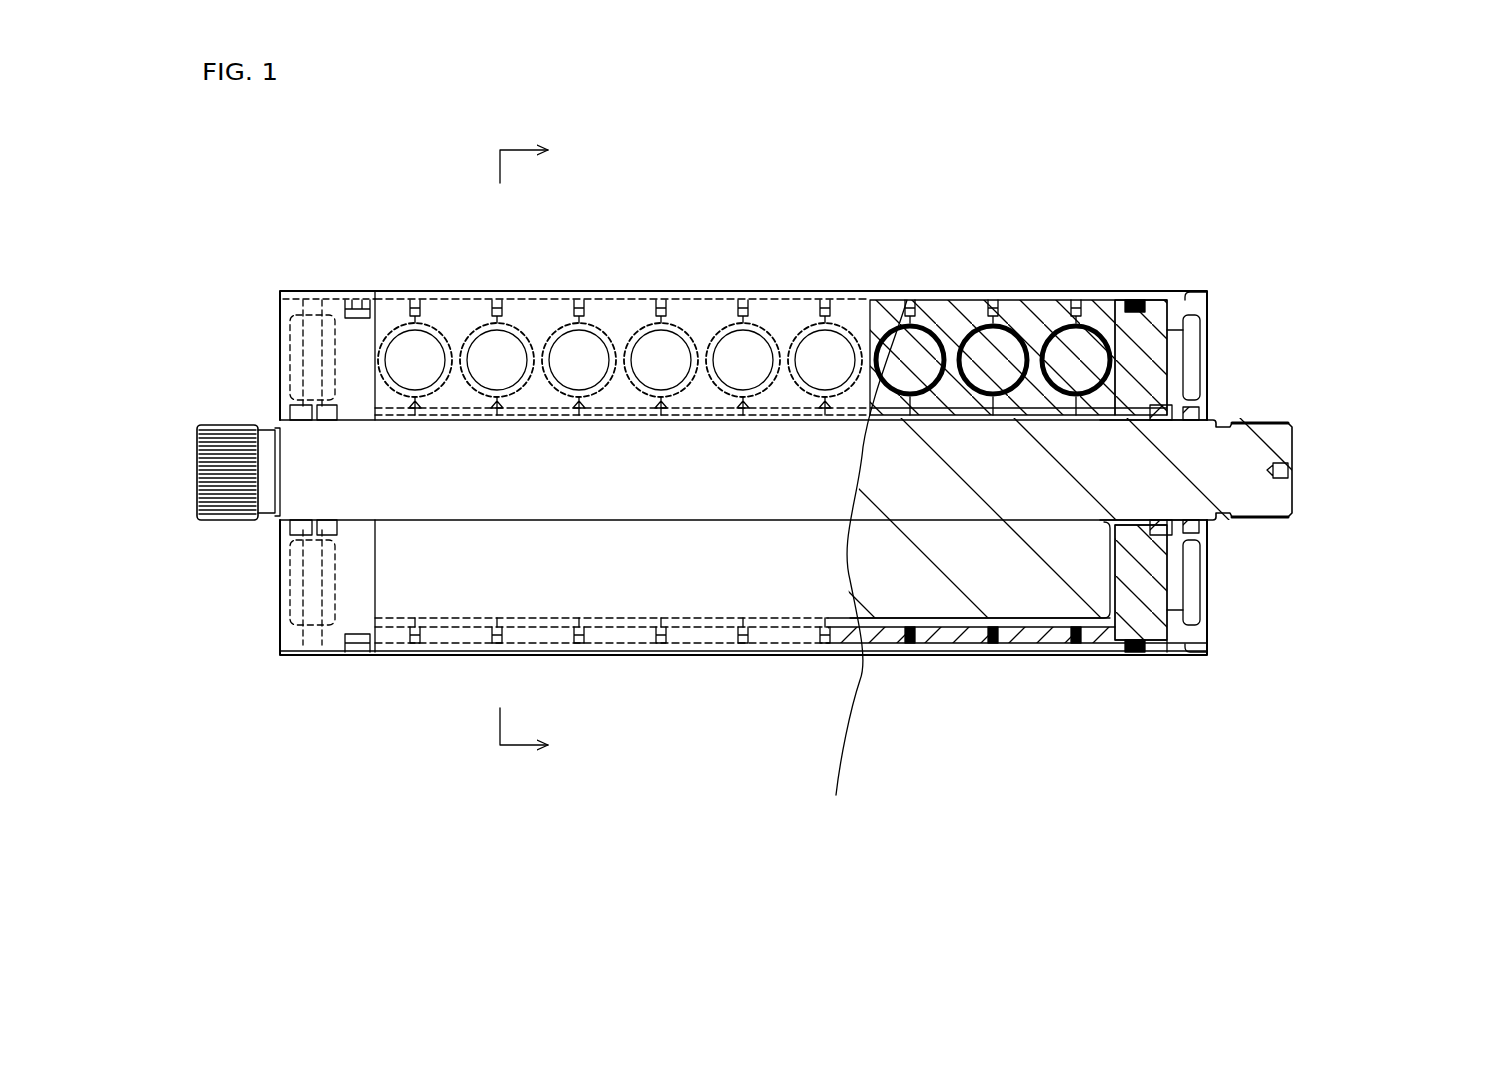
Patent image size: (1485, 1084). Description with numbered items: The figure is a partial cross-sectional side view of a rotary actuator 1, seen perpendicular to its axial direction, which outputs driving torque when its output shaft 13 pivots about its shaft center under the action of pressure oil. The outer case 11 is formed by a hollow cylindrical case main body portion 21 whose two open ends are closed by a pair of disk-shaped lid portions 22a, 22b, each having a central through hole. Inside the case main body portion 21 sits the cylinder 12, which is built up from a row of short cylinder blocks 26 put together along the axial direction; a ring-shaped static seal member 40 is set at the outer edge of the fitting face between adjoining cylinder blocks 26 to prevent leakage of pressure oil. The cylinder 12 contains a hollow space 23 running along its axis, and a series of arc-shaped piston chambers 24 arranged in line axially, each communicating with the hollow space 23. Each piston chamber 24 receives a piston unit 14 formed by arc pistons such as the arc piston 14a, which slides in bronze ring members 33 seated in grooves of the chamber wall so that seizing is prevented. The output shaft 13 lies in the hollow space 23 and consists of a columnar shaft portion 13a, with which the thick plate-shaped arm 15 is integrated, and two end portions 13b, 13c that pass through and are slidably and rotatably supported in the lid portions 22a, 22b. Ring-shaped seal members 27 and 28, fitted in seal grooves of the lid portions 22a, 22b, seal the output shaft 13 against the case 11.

The rotary actuator 1 is at (1051, 176).
The case 11 is at (907, 300).
The cylinder 12 is at (726, 461).
The output shaft 13 is at (791, 489).
The shaft portion 13a is at (1117, 395).
The end portion 13b is at (1167, 490).
The end portion 13c is at (257, 480).
The piston unit 14 is at (854, 229).
The arc piston 14a is at (400, 330).
The arm 15 is at (895, 612).
The case main body portion 21 is at (936, 655).
The lid portion 22a is at (1167, 580).
The lid portion 22b is at (320, 573).
The hollow space 23 is at (950, 412).
The piston chamber 24 is at (415, 300).
The cylinder block 26 is at (322, 298).
The seal member 27 is at (1163, 555).
The seal member 28 is at (325, 405).
The ring member 33 is at (620, 340).
The seal member 40 is at (895, 325).